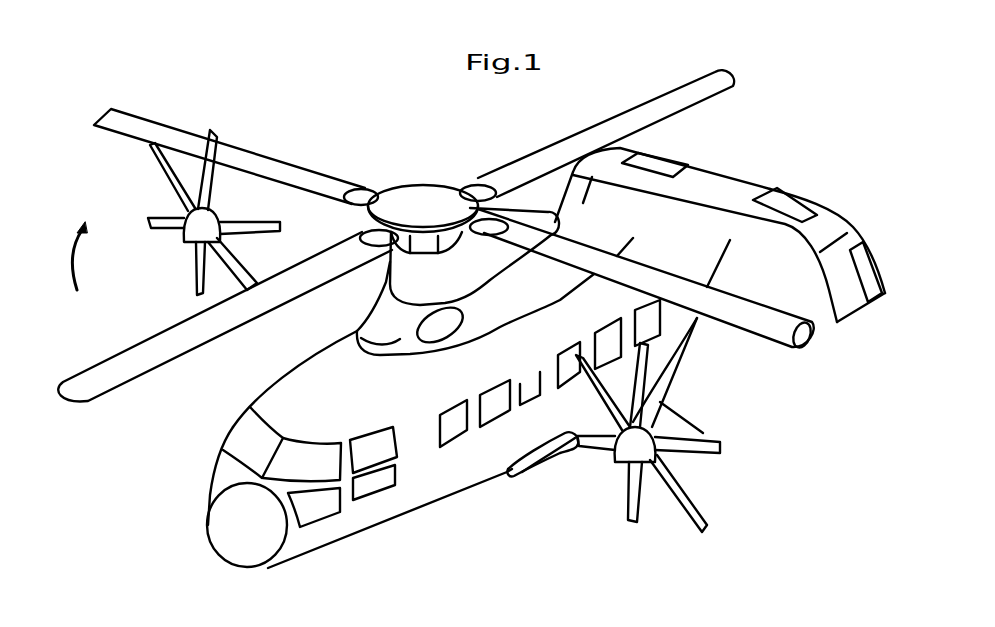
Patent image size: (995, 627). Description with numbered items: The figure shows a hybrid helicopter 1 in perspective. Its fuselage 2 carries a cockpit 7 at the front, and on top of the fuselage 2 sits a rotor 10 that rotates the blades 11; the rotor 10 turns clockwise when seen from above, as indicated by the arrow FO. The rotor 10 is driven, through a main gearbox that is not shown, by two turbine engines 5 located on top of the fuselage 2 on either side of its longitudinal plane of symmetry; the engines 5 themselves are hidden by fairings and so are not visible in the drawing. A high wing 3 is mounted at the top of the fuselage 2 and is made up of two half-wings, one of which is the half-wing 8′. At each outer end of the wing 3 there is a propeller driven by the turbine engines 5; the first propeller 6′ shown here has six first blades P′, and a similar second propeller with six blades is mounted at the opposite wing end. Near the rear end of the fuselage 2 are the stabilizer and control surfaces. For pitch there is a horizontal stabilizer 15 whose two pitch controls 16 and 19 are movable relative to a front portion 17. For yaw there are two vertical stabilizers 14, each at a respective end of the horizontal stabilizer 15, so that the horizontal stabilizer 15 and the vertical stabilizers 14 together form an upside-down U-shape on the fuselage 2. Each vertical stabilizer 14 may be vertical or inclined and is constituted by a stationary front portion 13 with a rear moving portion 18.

The hybrid helicopter 1 is at (534, 528).
The fuselage 2 is at (418, 516).
The high wing 3 is at (336, 308).
The turbine engines 5 is at (381, 176).
The first propeller 6′ is at (167, 222).
The cockpit 7 is at (243, 418).
The half-wing 8′ is at (245, 207).
The rotor 10 is at (736, 342).
The blades 11 is at (110, 371).
The stationary front portions 13 is at (853, 308).
The vertical stabilizers 14 is at (874, 243).
The horizontal stabilizer 15 is at (809, 190).
The pitch control 16 is at (787, 193).
The front portion 17 is at (777, 223).
The rear moving portions 18 is at (853, 260).
The pitch control 19 is at (668, 162).
The first blades P′ is at (195, 279).
The arrow F0 FO is at (93, 256).